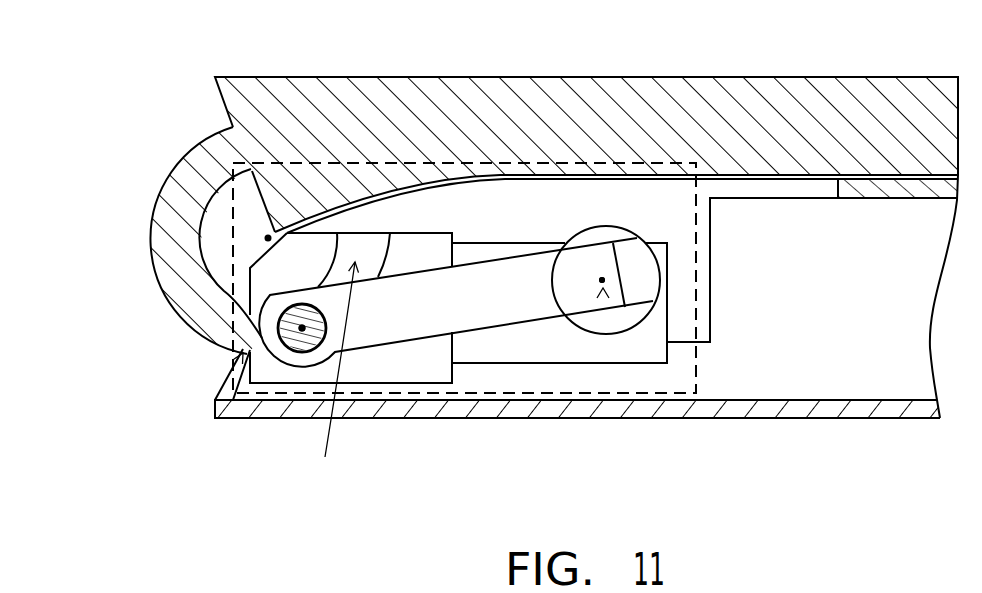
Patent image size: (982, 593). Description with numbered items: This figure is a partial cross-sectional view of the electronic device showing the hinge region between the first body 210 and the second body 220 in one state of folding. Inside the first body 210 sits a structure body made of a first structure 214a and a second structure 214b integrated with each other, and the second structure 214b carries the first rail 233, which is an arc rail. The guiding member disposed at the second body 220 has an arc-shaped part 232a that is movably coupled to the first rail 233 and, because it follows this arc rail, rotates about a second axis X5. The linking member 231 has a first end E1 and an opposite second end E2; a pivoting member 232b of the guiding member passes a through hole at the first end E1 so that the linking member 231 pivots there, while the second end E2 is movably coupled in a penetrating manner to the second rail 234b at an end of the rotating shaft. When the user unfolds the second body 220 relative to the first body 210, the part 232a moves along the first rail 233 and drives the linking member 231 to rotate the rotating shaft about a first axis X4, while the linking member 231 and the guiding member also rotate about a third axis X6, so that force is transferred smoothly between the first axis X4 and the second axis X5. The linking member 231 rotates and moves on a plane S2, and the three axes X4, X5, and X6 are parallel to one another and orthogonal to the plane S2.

The second body 220 is at (553, 92).
The part of the guiding member 232a is at (178, 243).
The second axis X5 is at (259, 236).
The second structure 214b is at (390, 360).
The first structure 214a is at (518, 350).
The linking member 231 is at (457, 313).
The pivoting member 232b is at (295, 338).
The first end E1 is at (293, 328).
The third axis X6 is at (243, 353).
The first rail 233 is at (326, 376).
The second rail 234b is at (637, 293).
The second end E2 is at (580, 287).
The first axis X4 is at (603, 298).
The plane S2 is at (696, 355).
The first body 210 is at (860, 387).